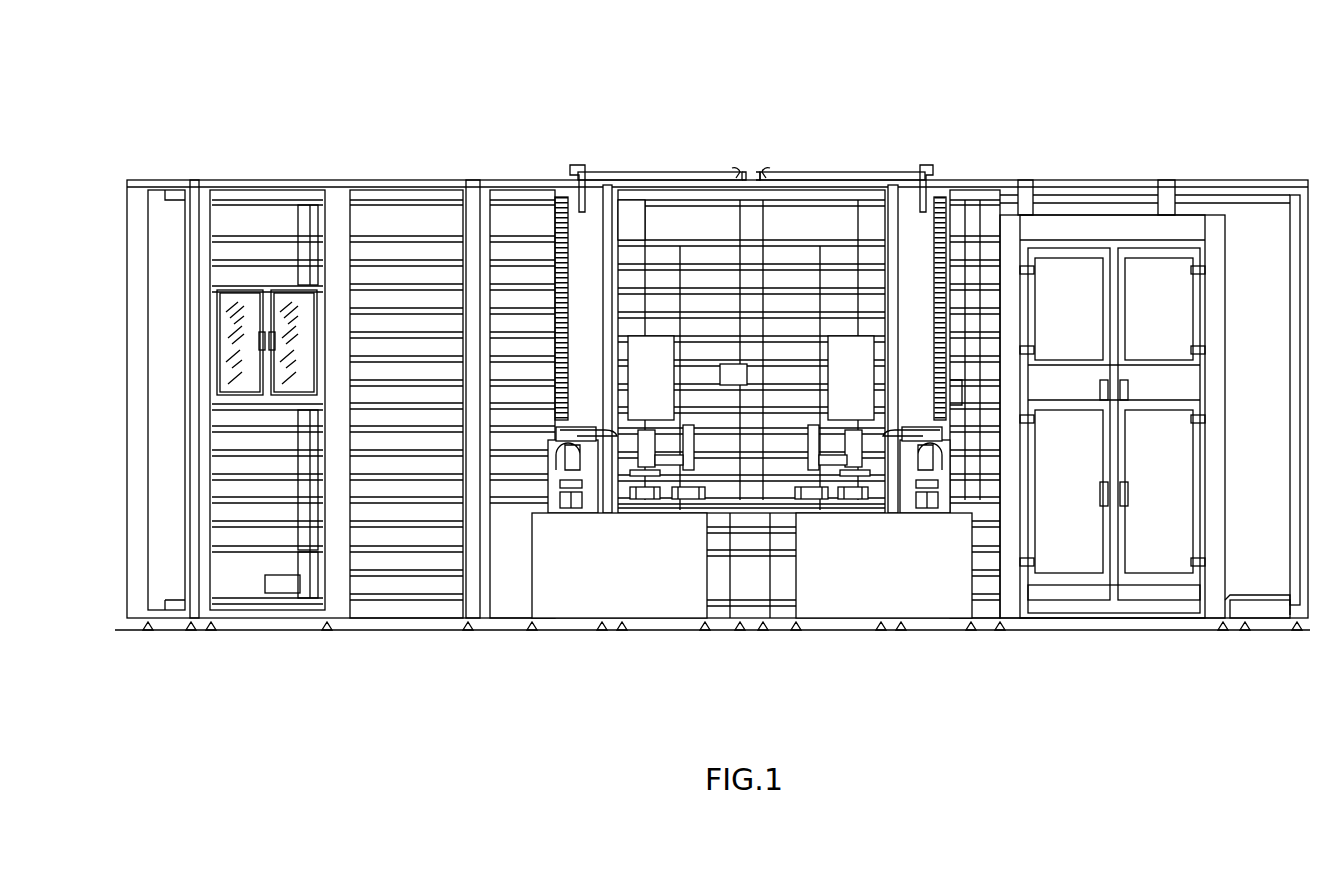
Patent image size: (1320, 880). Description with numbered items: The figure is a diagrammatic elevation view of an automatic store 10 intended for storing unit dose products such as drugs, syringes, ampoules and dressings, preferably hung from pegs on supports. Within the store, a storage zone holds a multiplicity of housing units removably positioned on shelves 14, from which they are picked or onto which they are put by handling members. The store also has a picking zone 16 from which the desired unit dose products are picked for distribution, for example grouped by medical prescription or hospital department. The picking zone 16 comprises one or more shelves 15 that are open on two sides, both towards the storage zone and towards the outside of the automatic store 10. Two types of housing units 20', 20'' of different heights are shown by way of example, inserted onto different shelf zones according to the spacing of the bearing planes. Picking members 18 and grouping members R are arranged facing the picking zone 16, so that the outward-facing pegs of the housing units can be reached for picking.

The automatic store 10 is at (326, 123).
The shelves 14 is at (430, 284).
The shelves 15 is at (733, 510).
The picking zone 16 is at (733, 560).
The picking members 18 is at (560, 192).
The housing unit 20' is at (775, 236).
The housing unit 20'' is at (657, 164).
The grouping members R is at (650, 508).